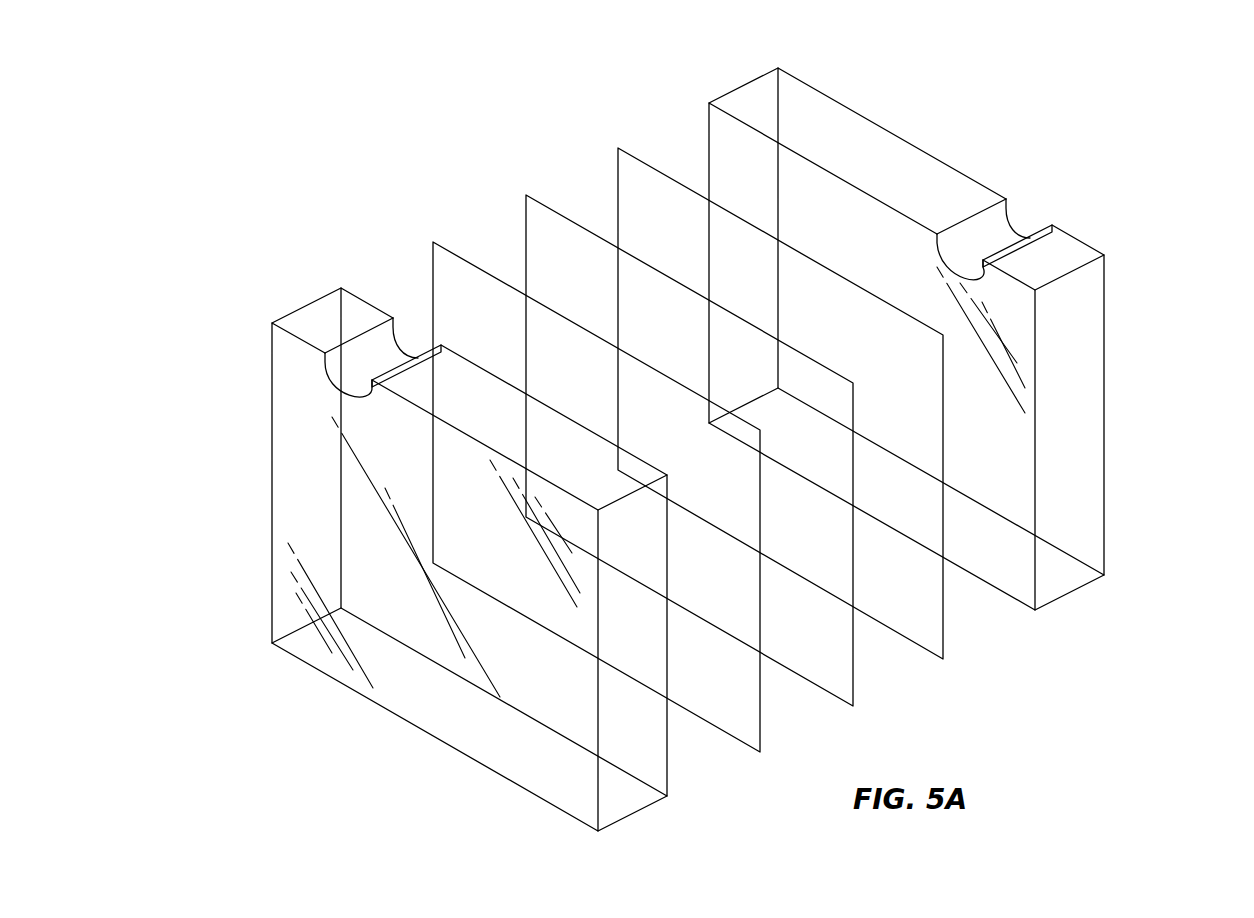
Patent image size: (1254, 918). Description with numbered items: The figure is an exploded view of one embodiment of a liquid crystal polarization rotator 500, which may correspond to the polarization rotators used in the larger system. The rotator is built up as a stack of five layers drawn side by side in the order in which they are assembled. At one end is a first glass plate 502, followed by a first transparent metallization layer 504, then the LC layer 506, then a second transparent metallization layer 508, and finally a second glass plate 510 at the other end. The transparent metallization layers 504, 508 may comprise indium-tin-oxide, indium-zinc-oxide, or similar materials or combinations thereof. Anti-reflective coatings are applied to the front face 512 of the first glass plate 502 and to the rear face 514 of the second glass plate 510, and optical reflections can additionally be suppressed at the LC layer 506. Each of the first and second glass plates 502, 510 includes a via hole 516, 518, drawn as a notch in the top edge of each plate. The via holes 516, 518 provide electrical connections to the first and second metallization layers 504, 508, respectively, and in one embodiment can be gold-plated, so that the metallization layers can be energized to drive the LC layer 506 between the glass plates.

The liquid crystal polarization rotator 500 is at (260, 116).
The first glass plate 502 is at (307, 305).
The first transparent metallization layer 504 is at (433, 242).
The LC layer 506 is at (526, 195).
The second transparent metallization layer 508 is at (618, 148).
The second glass plate 510 is at (745, 84).
The front face 512 is at (316, 532).
The rear face 514 is at (1149, 323).
The via hole 516 is at (353, 372).
The via hole 518 is at (998, 231).